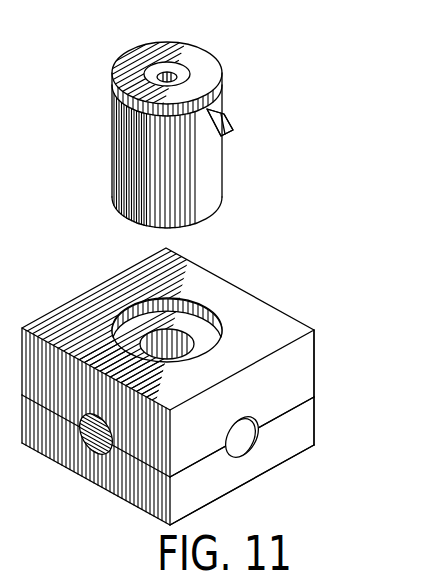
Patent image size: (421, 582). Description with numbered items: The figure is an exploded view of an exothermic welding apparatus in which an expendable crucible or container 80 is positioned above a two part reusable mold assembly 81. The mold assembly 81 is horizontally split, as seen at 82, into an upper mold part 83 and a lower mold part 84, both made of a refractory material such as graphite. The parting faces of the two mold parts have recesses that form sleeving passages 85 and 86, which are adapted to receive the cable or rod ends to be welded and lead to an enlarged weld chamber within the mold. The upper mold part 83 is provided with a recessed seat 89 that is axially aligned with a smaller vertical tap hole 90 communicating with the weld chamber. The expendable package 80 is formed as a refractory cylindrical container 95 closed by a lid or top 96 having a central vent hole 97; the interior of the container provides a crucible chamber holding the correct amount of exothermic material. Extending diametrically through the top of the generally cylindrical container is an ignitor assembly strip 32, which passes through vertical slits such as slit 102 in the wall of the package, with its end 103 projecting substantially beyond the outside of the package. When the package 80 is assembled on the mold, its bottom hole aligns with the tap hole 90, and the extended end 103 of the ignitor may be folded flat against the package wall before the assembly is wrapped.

The expendable crucible or container 80 is at (187, 114).
The refractory cylindrical container 95 is at (125, 162).
The lid or top 96 is at (203, 63).
The central vent hole 97 is at (167, 73).
The vertical slit 102 is at (206, 113).
The end of ignitor assembly 103 is at (226, 113).
The ignitor assembly strip 32 is at (238, 126).
The mold assembly 81 is at (262, 287).
The horizontal split 82 is at (300, 410).
The upper mold part 83 is at (313, 354).
The lower mold part 84 is at (271, 452).
The sleeving passage 85 is at (242, 457).
The sleeving passage 86 is at (88, 453).
The recessed seat 89 is at (208, 312).
The tap hole 90 is at (192, 341).